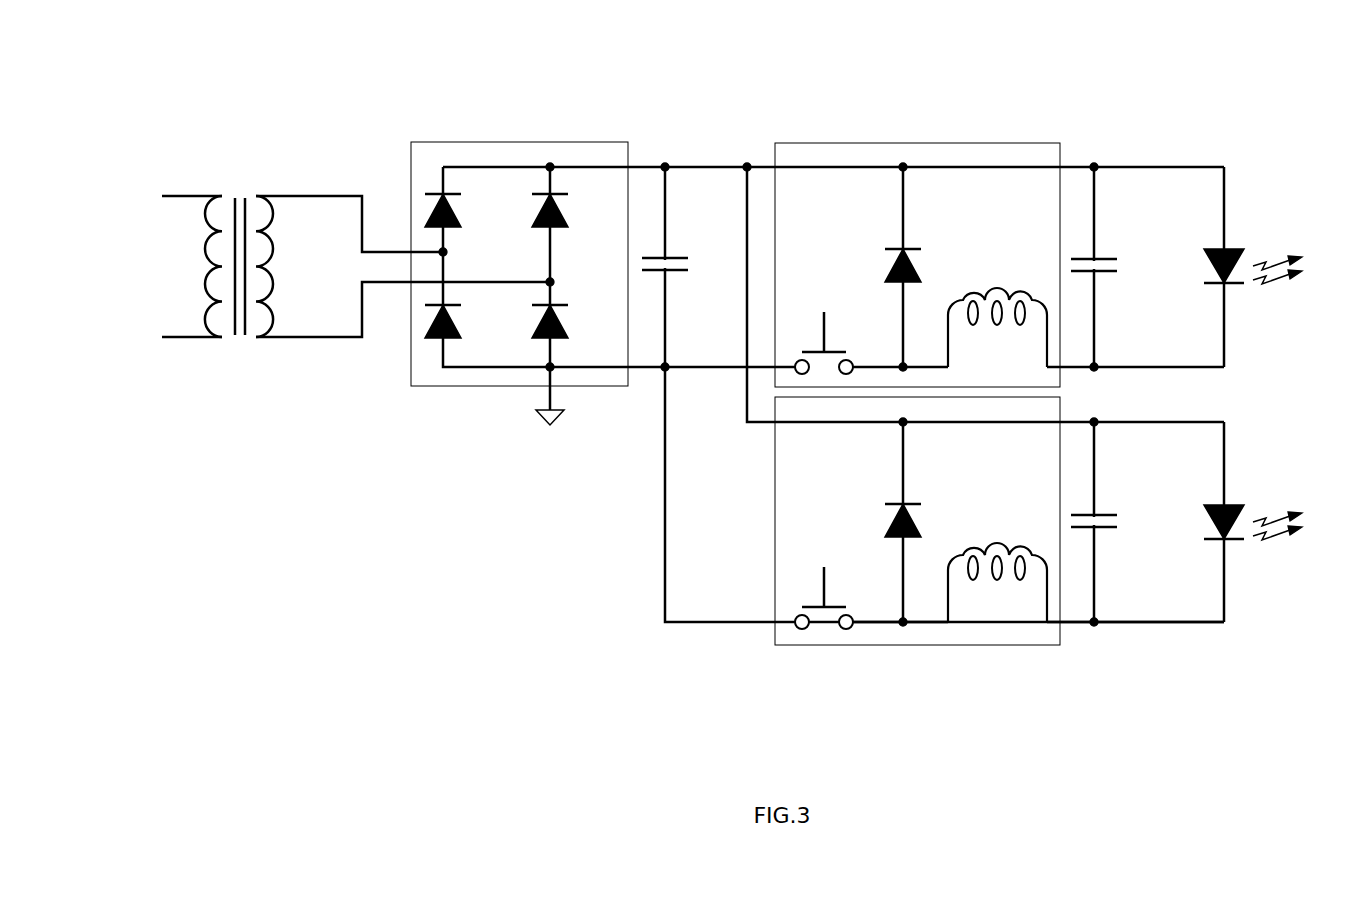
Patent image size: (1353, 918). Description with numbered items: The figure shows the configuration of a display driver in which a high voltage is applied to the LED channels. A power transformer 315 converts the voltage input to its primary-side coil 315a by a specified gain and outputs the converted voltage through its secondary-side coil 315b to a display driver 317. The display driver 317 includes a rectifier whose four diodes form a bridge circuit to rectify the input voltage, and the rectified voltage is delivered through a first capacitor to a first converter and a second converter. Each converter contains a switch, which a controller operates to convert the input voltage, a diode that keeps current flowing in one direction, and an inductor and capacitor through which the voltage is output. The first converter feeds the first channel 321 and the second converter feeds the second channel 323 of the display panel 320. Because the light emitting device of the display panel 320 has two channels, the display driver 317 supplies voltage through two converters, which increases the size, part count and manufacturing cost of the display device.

The power transformer 315 is at (356, 279).
The primary-side coil 315a is at (183, 195).
The secondary-side coil 315b is at (318, 195).
The display driver 317 is at (817, 396).
The display panel 320 is at (1188, 323).
The first channel 321 is at (1255, 200).
The second channel 323 is at (1255, 457).